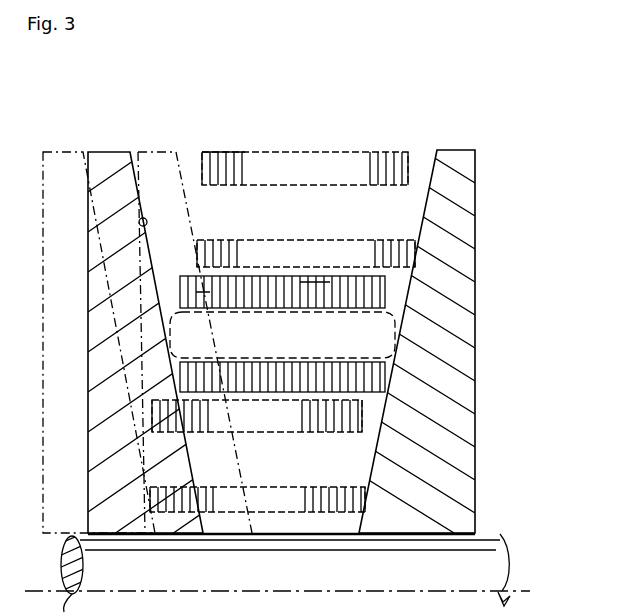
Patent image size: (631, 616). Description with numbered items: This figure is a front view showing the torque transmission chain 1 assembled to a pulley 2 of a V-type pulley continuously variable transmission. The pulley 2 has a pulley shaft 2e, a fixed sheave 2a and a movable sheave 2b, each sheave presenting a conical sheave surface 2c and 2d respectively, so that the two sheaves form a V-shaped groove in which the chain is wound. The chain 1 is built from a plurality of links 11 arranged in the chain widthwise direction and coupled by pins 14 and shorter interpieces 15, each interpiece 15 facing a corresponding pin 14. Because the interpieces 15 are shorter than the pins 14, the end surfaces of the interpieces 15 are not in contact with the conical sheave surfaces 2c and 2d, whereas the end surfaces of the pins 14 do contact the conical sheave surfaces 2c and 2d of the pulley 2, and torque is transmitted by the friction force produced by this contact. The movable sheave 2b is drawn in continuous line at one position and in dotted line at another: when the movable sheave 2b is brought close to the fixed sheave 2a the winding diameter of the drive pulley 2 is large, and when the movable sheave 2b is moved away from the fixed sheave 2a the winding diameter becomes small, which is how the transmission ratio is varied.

The torque transmission chain 1 is at (328, 152).
The pulley 2 is at (294, 308).
The fixed sheave 2a is at (460, 426).
The movable sheave 2b is at (62, 152).
The conical sheave surface 2c is at (420, 210).
The conical sheave surface 2d is at (139, 222).
The pulley shaft 2e is at (493, 565).
The link 11 is at (208, 290).
The pin 14 is at (395, 316).
The interpiece 15 is at (395, 345).